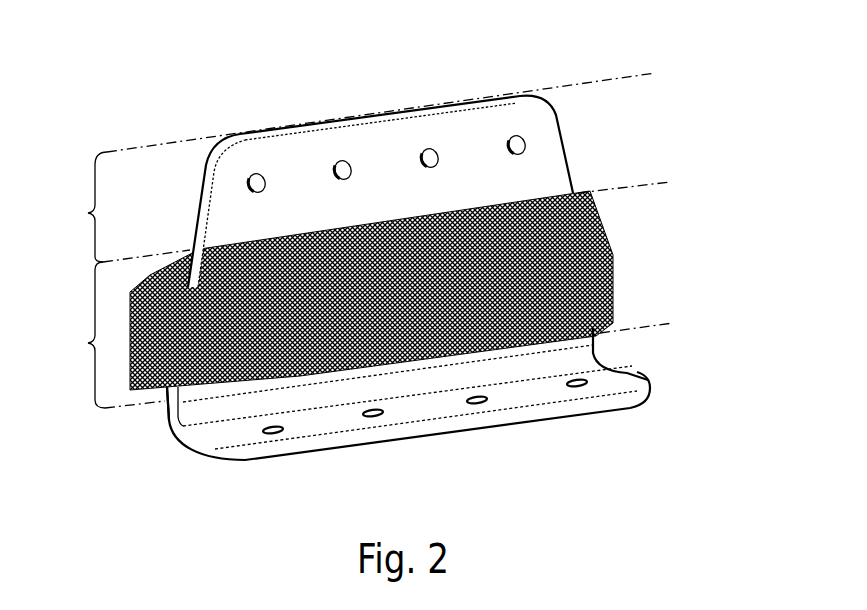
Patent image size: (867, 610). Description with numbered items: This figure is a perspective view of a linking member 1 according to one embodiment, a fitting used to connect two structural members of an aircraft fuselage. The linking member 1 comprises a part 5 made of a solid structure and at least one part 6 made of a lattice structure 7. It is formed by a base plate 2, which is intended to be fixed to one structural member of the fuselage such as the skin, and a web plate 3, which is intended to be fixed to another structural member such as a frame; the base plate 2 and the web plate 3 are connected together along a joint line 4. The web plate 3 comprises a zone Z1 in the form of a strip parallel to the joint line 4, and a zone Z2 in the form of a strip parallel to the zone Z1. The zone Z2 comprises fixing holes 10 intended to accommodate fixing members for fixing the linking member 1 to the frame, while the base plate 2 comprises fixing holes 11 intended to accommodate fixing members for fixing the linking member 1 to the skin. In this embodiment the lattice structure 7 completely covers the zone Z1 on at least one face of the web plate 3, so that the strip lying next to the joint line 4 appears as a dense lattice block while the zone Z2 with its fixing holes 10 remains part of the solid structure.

The linking member 1 is at (637, 178).
The base plate 2 is at (627, 383).
The web plate 3 is at (553, 177).
The joint line 4 is at (177, 420).
The part made of a solid structure 5 is at (537, 167).
The part made of a lattice structure 6 is at (150, 275).
The lattice structure 7 is at (617, 260).
The fixing holes 10 is at (256, 176).
The fixing holes 11 is at (285, 428).
The zone in the form of a strip Z1 is at (363, 335).
The zone in the form of a strip Z2 is at (353, 167).